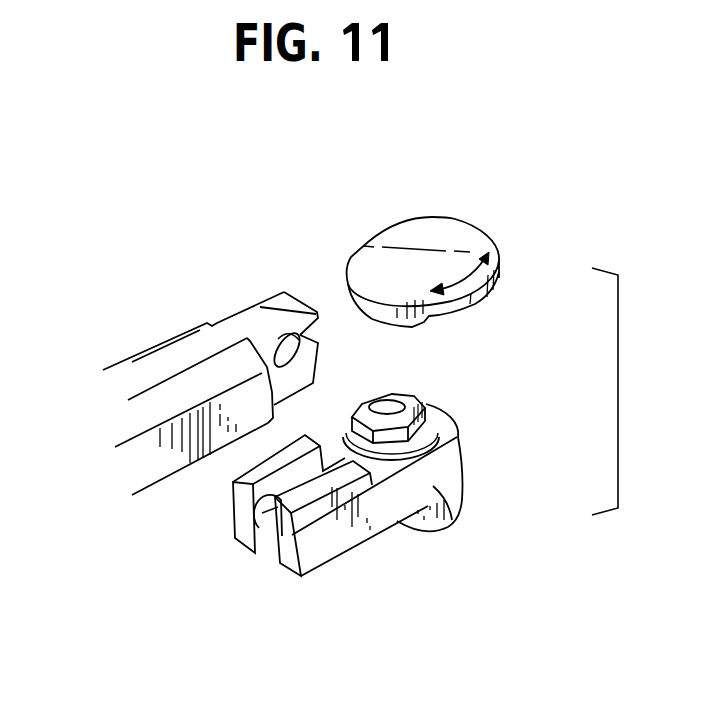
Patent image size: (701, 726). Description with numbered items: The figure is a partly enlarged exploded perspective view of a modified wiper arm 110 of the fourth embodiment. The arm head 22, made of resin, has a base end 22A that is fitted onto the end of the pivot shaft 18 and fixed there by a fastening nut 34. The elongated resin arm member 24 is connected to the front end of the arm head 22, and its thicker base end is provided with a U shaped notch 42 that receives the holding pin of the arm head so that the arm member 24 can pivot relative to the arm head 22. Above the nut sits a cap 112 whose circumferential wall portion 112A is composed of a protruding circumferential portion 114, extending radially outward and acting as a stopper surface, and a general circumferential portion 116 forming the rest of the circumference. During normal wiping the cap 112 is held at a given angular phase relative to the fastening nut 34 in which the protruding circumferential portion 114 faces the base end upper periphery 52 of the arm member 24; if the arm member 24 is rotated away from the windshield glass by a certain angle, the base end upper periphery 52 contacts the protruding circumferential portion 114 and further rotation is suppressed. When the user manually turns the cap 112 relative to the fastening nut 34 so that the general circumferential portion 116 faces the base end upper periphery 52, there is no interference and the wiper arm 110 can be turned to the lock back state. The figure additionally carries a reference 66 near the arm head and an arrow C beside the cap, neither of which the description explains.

The wiper arm 110 is at (318, 192).
The arm member 24 is at (149, 348).
The U shaped notch 42 is at (276, 349).
The base end upper periphery 52 is at (296, 306).
The arm head 22 is at (338, 556).
The base end 22A is at (451, 513).
The bolt 66 is at (276, 520).
The fastening nut 34 is at (351, 415).
The pivot shaft 18 is at (386, 405).
The circumferential wall portion 112A is at (549, 335).
The cap 112 is at (448, 216).
The protruding circumferential portion 114 is at (388, 322).
The general circumferential portion 116 is at (478, 302).
The rotation direction C is at (489, 292).